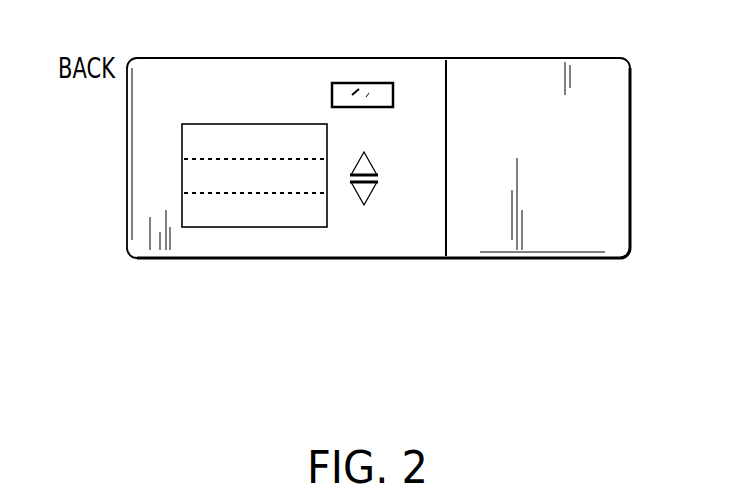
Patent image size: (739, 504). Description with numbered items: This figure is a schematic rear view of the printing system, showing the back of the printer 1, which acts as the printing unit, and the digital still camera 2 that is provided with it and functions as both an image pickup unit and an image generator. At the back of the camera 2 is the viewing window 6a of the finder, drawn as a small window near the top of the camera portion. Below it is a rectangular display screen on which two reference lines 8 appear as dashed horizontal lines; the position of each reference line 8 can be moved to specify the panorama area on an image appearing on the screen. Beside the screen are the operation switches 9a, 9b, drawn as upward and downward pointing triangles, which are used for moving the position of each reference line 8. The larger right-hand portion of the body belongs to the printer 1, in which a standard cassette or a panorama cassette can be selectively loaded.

The printer 1 is at (577, 255).
The digital still camera 2 is at (326, 259).
The viewing window 6a is at (386, 82).
The reference line 8 is at (190, 161).
The operation switch 9a is at (372, 160).
The operation switch 9b is at (376, 196).